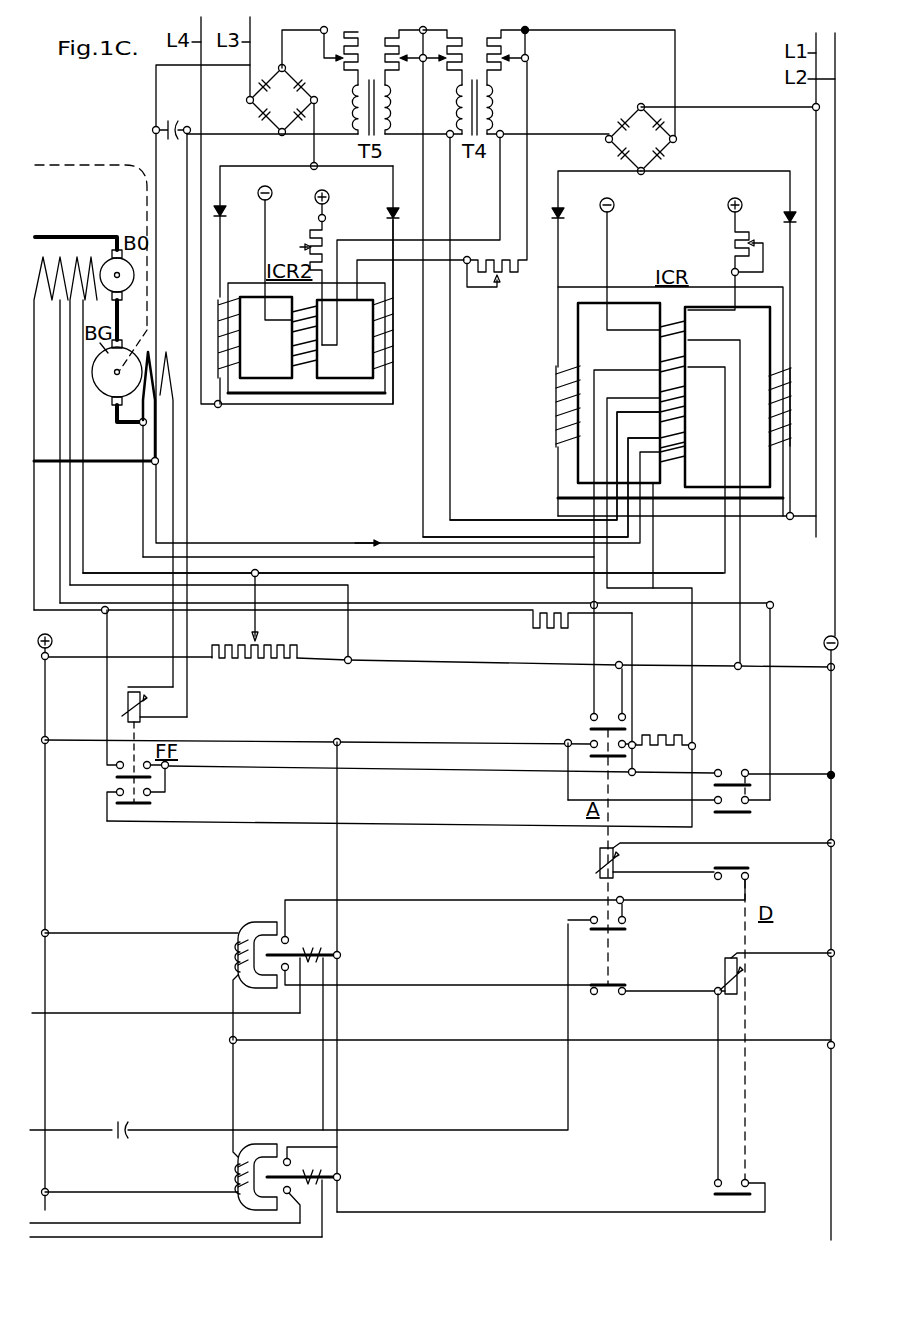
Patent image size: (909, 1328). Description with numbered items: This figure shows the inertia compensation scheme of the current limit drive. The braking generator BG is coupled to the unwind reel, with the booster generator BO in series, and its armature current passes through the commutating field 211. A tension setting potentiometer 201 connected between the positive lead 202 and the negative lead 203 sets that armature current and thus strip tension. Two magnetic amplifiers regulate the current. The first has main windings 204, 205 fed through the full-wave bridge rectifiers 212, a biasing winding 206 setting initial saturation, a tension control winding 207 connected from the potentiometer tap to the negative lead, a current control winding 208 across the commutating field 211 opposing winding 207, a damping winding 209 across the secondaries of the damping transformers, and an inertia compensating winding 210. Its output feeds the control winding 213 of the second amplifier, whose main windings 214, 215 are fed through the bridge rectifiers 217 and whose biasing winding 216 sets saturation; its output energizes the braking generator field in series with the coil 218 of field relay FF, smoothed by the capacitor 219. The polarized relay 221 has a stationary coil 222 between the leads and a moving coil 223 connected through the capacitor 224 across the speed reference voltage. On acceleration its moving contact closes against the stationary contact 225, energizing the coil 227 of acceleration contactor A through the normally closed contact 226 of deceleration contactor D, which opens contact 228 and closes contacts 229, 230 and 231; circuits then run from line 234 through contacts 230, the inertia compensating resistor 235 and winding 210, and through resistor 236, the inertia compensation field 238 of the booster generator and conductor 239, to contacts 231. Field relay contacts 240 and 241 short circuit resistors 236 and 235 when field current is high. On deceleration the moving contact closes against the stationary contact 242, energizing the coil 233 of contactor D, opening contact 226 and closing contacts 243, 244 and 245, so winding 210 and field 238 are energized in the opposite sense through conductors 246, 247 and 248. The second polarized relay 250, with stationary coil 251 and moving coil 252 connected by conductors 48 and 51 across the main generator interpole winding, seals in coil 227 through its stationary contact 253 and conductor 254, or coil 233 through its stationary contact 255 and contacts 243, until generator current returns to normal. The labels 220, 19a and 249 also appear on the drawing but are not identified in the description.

The smoothing capacitor 219 is at (202, 102).
The rectifiers 217 is at (303, 104).
The rectifiers 212 is at (668, 146).
The inertia compensation field 238 is at (61, 258).
The generator brush 220 is at (86, 257).
The brush 19a is at (168, 353).
The commutating field 211 is at (143, 426).
The main winding 214 is at (243, 296).
The main winding 215 is at (384, 300).
The biasing winding 216 is at (292, 322).
The control winding 213 is at (297, 360).
The biasing winding 206 is at (686, 327).
The tension control winding 207 is at (662, 364).
The main winding 204 is at (556, 388).
The inertia compensating winding 210 is at (660, 388).
The damping winding 209 is at (686, 422).
The current control winding 208 is at (686, 460).
The main winding 205 is at (777, 442).
The tension setting potentiometer 201 is at (268, 644).
The conductor 239 is at (491, 607).
The inertia compensating resistor 236 is at (553, 631).
The conductor 248 is at (634, 646).
The positive lead 202 is at (50, 684).
The negative lead 203 is at (830, 696).
The conductor 249 is at (592, 683).
The coil of field relay 218 is at (140, 704).
The contacts of acceleration relay 231 is at (590, 728).
The contacts of acceleration relay 230 is at (604, 758).
The inertia compensating resistor 235 is at (685, 733).
The conductor 247 is at (771, 729).
The line 234 is at (464, 745).
The contacts of deceleration contactor 245 is at (731, 783).
The contacts of deceleration contactor 244 is at (748, 805).
The conductor 246 is at (678, 807).
The contacts of field relay 240 is at (114, 768).
The contacts of field relay 241 is at (152, 794).
The coil of acceleration contactor 227 is at (600, 850).
The normally closed contact of deceleration contactor 226 is at (744, 867).
The polarized relay 221 is at (161, 967).
The stationary coil 222 is at (234, 956).
The moving coil 223 is at (316, 948).
The stationary contact 225 is at (287, 934).
The stationary contact 242 is at (284, 972).
The contacts of acceleration contactor 229 is at (610, 931).
The normally closed contact of acceleration contactor 228 is at (616, 990).
The coil of deceleration contactor 233 is at (740, 981).
The contacts of deceleration contactor 243 is at (738, 1185).
The capacitor 224 is at (123, 1120).
The conductor 254 is at (429, 1130).
The polarized relay 250 is at (161, 1127).
The stationary coil 251 is at (234, 1172).
The moving coil 252 is at (316, 1172).
The stationary contact 253 is at (284, 1158).
The stationary contact 255 is at (290, 1196).
The conductor 48 is at (107, 1233).
The conductor 51 is at (146, 1237).